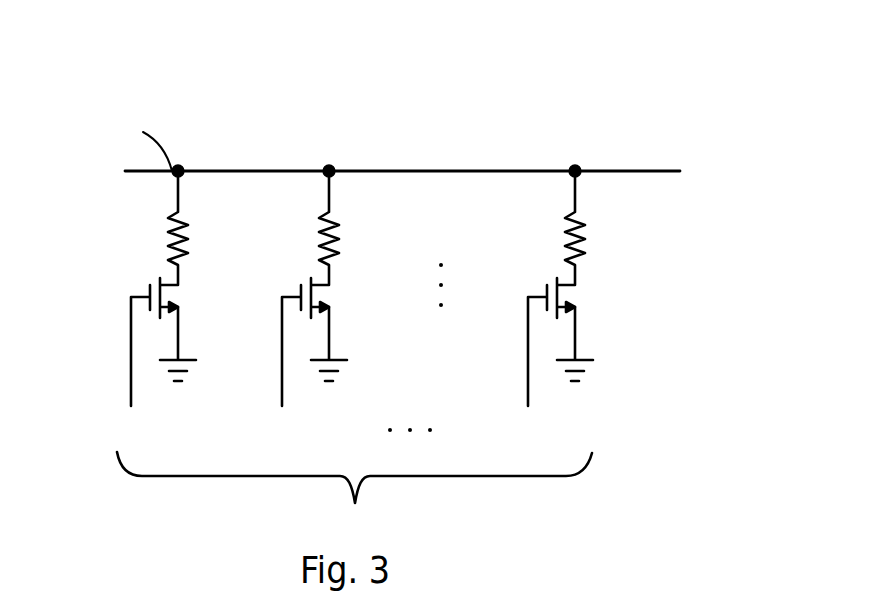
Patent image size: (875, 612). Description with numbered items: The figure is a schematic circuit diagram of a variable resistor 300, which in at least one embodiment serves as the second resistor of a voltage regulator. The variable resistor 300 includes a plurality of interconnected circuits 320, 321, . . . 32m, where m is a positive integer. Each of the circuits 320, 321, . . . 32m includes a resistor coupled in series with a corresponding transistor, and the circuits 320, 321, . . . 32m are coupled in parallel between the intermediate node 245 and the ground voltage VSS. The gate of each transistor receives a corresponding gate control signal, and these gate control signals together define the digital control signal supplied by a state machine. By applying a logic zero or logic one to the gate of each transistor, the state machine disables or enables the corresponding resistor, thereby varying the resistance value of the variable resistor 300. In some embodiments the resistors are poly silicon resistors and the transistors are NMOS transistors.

The variable resistor 300 is at (762, 45).
The circuit 320 is at (188, 152).
The circuit 321 is at (339, 152).
The circuit 32m is at (585, 152).
The intermediate node 245 is at (648, 171).